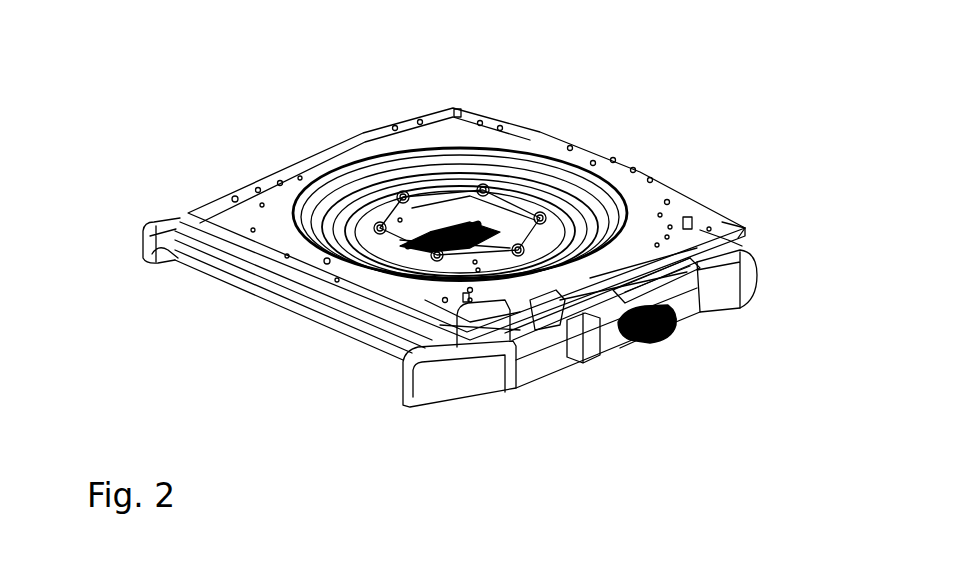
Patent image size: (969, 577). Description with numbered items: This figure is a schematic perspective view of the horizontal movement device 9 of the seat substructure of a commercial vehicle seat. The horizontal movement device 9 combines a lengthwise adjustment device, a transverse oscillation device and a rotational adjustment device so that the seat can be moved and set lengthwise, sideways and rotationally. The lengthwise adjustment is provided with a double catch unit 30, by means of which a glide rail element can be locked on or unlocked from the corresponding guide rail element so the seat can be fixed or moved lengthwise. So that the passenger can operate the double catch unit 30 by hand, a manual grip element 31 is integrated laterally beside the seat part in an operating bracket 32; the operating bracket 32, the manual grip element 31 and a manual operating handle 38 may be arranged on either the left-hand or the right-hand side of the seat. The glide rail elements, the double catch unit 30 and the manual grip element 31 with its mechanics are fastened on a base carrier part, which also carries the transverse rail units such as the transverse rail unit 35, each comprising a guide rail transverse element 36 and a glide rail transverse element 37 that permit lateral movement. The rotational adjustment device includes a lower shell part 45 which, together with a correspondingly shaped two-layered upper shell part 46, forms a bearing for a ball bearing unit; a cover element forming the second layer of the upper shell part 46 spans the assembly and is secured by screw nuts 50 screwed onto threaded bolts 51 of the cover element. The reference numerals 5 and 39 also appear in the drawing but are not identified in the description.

The first direction 5 is at (255, 337).
The horizontal movement device 9 is at (198, 384).
The double catch unit 30 is at (127, 218).
The manual grip element 31 is at (445, 382).
The operating bracket 32 is at (806, 269).
The transverse rail unit 35 is at (740, 229).
The guide rail transverse element 36 is at (727, 252).
The glide rail transverse element 37 is at (730, 227).
The manual operating handle 38 is at (666, 328).
The guide rail 39 is at (649, 356).
The lower shell part 45 is at (548, 308).
The two-layered upper shell part 46 is at (474, 120).
The screw nuts 50 is at (399, 192).
The threaded bolts 51 is at (379, 190).